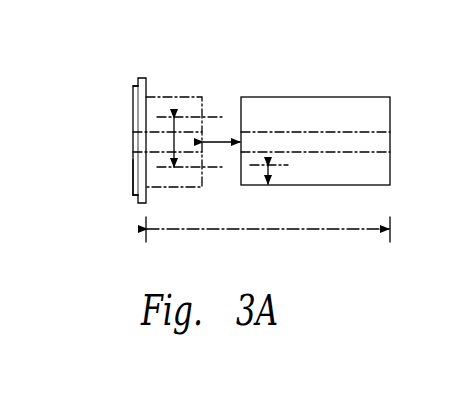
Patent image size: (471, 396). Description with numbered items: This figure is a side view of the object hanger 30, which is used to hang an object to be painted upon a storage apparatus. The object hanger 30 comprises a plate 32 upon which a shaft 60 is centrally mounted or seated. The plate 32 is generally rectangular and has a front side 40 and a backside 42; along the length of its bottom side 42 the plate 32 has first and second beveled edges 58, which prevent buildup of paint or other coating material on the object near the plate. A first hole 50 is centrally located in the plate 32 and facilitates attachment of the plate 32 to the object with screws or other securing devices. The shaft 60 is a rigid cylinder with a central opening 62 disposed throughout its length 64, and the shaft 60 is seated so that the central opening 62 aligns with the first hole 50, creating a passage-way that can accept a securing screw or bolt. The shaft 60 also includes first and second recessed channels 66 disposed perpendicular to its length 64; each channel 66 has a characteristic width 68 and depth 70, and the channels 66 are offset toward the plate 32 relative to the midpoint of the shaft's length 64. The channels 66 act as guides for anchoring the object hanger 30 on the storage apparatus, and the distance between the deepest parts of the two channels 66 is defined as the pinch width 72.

The object hanger 30 is at (57, 273).
The plate 32 is at (141, 78).
The front side 40 is at (145, 190).
The backside 42 is at (133, 170).
The first hole 50 is at (135, 143).
The beveled edge 58 is at (135, 78).
The shaft 60 is at (315, 110).
The central opening 62 is at (380, 141).
The length 64 is at (267, 230).
The recessed channel 66 is at (222, 116).
The width 68 is at (220, 142).
The depth 70 is at (272, 177).
The pinch width 72 is at (170, 140).